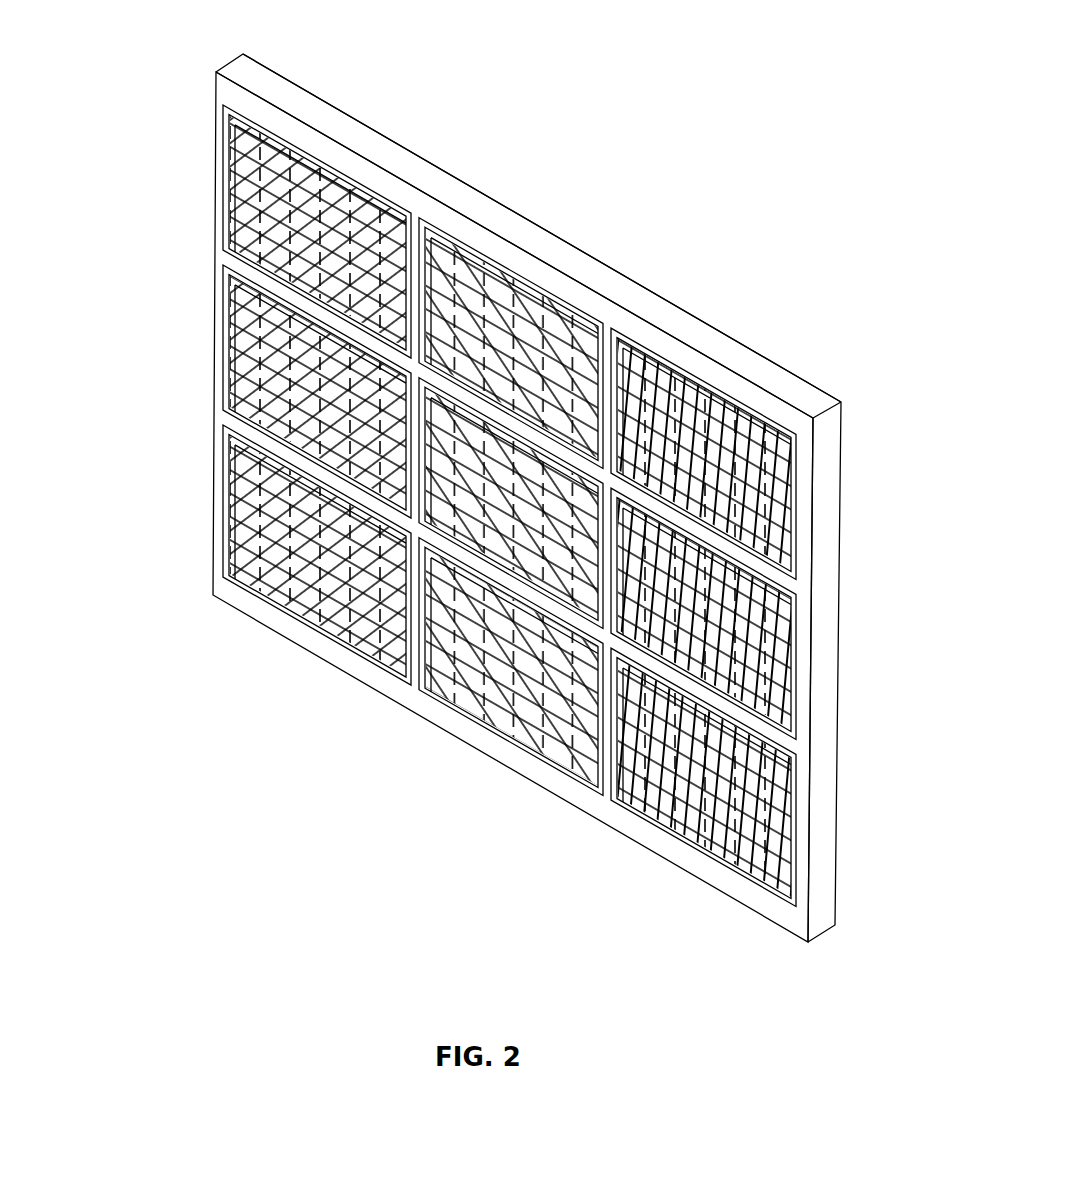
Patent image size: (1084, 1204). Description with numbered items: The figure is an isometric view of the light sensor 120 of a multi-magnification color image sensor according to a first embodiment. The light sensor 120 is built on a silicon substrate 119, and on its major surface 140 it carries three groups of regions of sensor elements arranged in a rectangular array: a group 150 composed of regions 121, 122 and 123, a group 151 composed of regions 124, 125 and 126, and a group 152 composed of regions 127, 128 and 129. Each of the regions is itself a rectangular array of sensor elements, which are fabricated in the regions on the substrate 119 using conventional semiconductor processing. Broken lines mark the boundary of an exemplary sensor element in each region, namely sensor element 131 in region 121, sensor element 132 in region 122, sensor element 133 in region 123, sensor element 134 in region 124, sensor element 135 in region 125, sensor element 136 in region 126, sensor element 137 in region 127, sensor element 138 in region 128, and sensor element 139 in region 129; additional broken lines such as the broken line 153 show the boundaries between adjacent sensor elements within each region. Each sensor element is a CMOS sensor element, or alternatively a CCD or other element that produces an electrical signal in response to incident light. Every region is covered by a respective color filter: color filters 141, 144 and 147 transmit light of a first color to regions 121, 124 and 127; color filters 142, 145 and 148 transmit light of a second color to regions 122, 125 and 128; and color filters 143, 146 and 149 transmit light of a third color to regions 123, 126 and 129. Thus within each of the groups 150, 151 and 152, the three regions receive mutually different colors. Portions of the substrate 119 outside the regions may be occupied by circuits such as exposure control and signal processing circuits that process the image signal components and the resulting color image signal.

The silicon substrate 119 is at (815, 397).
The light sensor 120 is at (482, 907).
The region 121 is at (285, 202).
The region 122 is at (512, 300).
The region 123 is at (749, 423).
The region 124 is at (266, 391).
The region 125 is at (545, 418).
The region 126 is at (761, 638).
The region 127 is at (281, 593).
The region 128 is at (497, 700).
The region 129 is at (750, 802).
The sensor element 131 is at (248, 115).
The sensor element 132 is at (447, 240).
The sensor element 133 is at (782, 548).
The sensor element 134 is at (247, 288).
The sensor element 135 is at (472, 400).
The sensor element 136 is at (783, 718).
The sensor element 137 is at (230, 447).
The sensor element 138 is at (467, 713).
The sensor element 139 is at (777, 805).
The major surface 140 is at (233, 95).
The color filter 141 is at (315, 157).
The color filter 142 is at (472, 247).
The color filter 143 is at (763, 413).
The color filter 144 is at (222, 335).
The color filter 145 is at (508, 415).
The color filter 146 is at (793, 637).
The color filter 147 is at (378, 665).
The color filter 148 is at (572, 778).
The color filter 149 is at (790, 870).
The group 150 is at (183, 198).
The group 151 is at (147, 333).
The group 152 is at (152, 489).
The broken line 153 is at (802, 522).